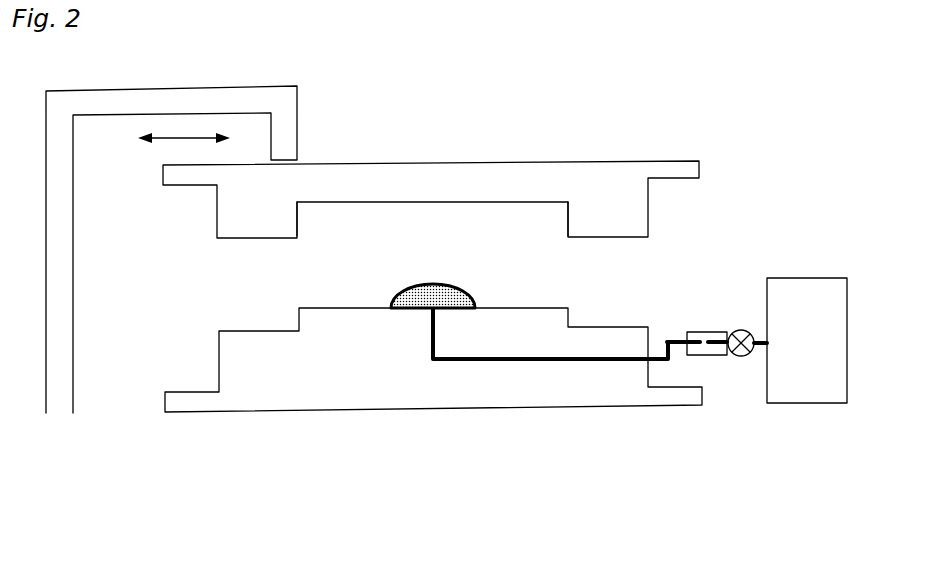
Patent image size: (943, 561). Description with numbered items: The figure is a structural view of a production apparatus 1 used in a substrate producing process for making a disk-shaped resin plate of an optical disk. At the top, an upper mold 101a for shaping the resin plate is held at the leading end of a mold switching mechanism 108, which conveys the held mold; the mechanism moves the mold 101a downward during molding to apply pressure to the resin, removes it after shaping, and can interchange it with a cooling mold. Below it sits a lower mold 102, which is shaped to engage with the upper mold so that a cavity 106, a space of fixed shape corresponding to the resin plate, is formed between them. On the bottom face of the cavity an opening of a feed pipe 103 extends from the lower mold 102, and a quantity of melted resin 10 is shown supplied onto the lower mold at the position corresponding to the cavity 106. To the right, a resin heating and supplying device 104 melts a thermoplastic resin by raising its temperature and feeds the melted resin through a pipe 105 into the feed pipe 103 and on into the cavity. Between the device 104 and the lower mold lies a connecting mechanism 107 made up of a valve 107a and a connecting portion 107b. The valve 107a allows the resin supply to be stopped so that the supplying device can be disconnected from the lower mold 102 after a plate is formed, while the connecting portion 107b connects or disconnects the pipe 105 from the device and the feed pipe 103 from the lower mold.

The production apparatus 1 is at (639, 150).
The melted resin 10 is at (470, 295).
The mold for resin plate shaping 101a is at (422, 160).
The lower mold 102 is at (398, 408).
The feed pipe 103 is at (545, 365).
The resin heating and supplying device 104 is at (818, 278).
The pipe 105 is at (708, 358).
The cavity 106 is at (488, 208).
The connecting mechanism 107 is at (719, 371).
The valve 107a is at (743, 329).
The connecting portion 107b is at (688, 331).
The mold switching mechanism 108 is at (73, 378).